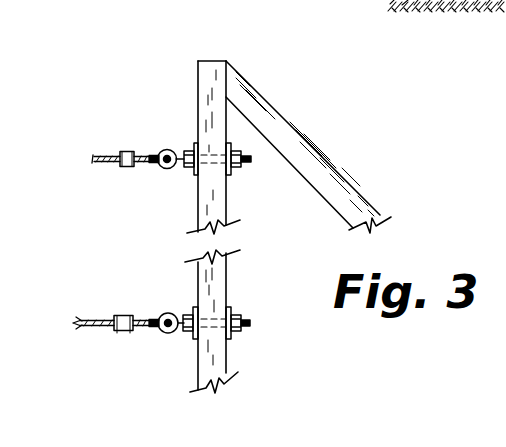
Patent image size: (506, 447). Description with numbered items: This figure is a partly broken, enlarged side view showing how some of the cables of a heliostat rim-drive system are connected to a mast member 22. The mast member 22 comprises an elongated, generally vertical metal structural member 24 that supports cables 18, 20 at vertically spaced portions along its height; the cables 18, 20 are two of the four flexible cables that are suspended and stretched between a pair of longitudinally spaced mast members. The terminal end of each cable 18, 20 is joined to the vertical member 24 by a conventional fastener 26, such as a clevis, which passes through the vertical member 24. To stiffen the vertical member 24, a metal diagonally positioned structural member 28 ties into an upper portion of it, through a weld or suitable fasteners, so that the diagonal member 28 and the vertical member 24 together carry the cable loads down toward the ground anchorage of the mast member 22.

The cable 18 is at (108, 157).
The cable 20 is at (93, 322).
The mast member 22 is at (216, 60).
The vertical structural member 24 is at (198, 90).
The fastener 26 is at (167, 169).
The diagonal structural member 28 is at (322, 154).